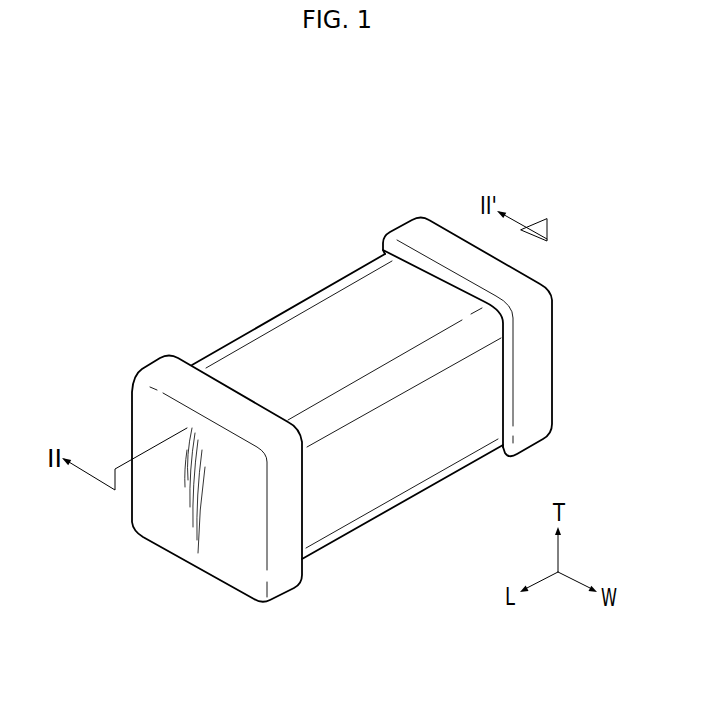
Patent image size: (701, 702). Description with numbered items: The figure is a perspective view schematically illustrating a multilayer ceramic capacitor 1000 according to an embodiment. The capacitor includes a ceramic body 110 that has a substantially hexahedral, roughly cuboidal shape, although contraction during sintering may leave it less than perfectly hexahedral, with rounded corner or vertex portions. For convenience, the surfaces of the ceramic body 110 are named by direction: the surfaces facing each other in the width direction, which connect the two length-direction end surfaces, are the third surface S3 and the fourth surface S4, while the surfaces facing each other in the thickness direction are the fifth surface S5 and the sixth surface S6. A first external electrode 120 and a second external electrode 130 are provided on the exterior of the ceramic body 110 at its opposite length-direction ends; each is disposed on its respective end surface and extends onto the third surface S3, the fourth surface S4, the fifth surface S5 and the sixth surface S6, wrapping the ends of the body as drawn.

The multilayer ceramic capacitor 1000 is at (353, 170).
The ceramic body 110 is at (256, 263).
The first external electrode 120 is at (219, 564).
The second external electrode 130 is at (542, 372).
The third surface S3 is at (223, 347).
The fourth surface S4 is at (418, 460).
The fifth surface S5 is at (308, 330).
The sixth surface S6 is at (353, 532).